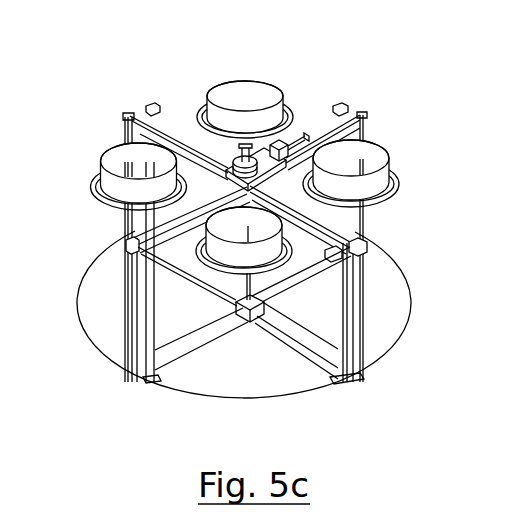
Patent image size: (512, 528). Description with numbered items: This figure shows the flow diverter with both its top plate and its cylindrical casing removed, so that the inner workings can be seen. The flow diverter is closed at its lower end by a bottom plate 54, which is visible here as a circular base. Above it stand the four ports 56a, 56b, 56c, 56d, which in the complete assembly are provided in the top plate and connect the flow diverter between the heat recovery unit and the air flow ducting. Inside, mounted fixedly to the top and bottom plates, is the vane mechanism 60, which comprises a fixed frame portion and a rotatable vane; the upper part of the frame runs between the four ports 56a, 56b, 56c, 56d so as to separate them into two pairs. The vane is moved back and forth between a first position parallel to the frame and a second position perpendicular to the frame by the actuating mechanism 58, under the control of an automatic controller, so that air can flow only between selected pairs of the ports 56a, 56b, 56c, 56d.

The bottom plate 54 is at (110, 293).
The port 56a is at (100, 169).
The port 56b is at (246, 80).
The port 56c is at (373, 152).
The port 56d is at (262, 247).
The mechanism 58 is at (268, 137).
The vane mechanism 60 is at (197, 287).